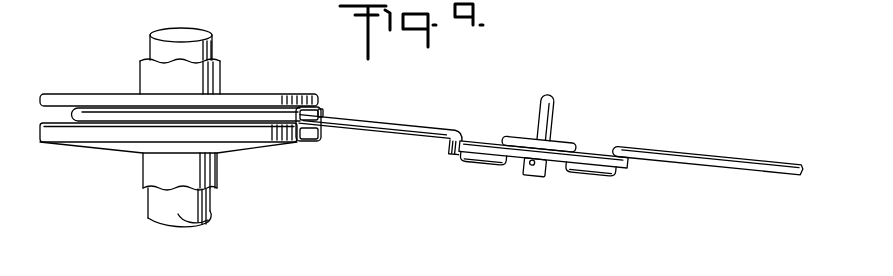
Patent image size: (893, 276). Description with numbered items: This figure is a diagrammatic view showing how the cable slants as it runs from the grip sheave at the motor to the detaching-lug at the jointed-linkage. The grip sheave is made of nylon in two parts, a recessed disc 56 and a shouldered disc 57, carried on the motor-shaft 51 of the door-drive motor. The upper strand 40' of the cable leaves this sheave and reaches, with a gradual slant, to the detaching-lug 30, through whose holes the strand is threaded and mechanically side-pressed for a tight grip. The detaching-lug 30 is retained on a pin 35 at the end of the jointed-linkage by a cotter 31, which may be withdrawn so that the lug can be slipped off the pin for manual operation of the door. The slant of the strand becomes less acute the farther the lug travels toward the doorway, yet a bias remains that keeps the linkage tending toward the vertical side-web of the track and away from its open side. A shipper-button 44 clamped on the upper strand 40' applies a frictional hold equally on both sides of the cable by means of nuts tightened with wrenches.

The motor-shaft 51 is at (212, 43).
The shouldered disc 57 is at (272, 93).
The recessed disc 56 is at (257, 146).
The shipper-button 44 is at (322, 112).
The upper strand 40' is at (550, 141).
The detaching-lug 30 is at (592, 145).
The pin 35 is at (553, 115).
The cotter 31 is at (523, 160).